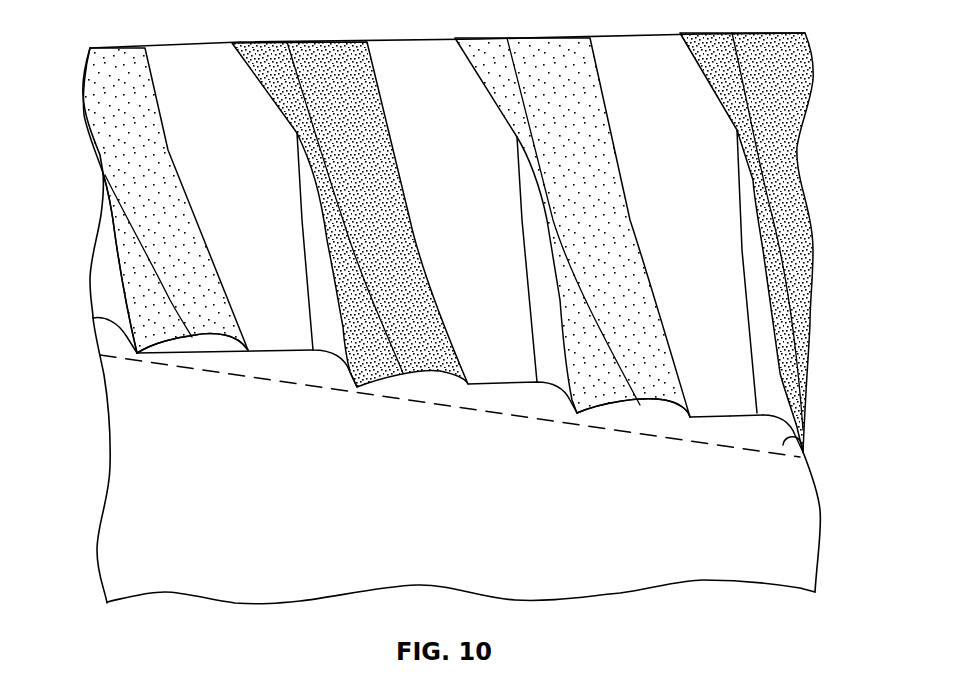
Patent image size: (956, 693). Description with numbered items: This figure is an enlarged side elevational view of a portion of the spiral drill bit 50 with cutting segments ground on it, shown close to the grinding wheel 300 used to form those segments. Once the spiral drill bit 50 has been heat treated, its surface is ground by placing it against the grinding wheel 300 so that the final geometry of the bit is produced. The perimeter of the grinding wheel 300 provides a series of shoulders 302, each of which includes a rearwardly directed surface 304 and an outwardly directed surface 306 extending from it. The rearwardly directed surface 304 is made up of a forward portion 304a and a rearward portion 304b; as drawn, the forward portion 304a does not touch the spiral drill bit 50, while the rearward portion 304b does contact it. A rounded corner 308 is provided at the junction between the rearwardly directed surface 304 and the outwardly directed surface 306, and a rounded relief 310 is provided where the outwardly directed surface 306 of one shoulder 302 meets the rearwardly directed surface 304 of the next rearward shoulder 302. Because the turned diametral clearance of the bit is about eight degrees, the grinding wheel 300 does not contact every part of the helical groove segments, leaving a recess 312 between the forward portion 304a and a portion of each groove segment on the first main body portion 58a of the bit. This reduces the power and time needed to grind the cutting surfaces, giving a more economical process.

The grinding wheel 300 is at (424, 551).
The shoulder 302 is at (265, 363).
The rearwardly directed surface 304 is at (662, 418).
The forward portion 304a is at (631, 416).
The rearward portion 304b is at (730, 417).
The outwardly directed surface 306 is at (783, 445).
The rounded corner 308 is at (767, 418).
The rounded relief 310 is at (596, 424).
The recess 312 is at (208, 347).
The spiral drill bit 50 is at (363, 337).
The first main body portion 58a is at (397, 374).